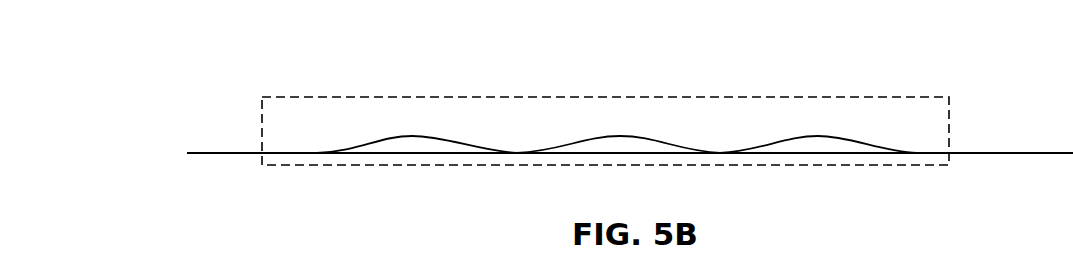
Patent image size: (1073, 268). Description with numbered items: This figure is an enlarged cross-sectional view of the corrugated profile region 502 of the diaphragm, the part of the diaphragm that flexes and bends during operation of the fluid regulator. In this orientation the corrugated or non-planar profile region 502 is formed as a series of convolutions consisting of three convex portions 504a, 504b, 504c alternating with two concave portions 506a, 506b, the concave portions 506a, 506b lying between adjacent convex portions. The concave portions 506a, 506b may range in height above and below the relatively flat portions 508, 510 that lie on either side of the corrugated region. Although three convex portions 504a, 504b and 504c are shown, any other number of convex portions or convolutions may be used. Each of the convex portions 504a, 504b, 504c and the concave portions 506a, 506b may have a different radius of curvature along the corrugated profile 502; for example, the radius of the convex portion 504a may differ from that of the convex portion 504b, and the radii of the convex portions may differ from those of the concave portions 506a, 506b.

The corrugated profile region 502 is at (858, 97).
The convex portion 504a is at (407, 136).
The convex portion 504b is at (625, 136).
The convex portion 504c is at (822, 136).
The concave portion 506a is at (517, 153).
The concave portion 506b is at (720, 153).
The relatively flat portion 508 is at (287, 153).
The relatively flat portion 510 is at (940, 153).